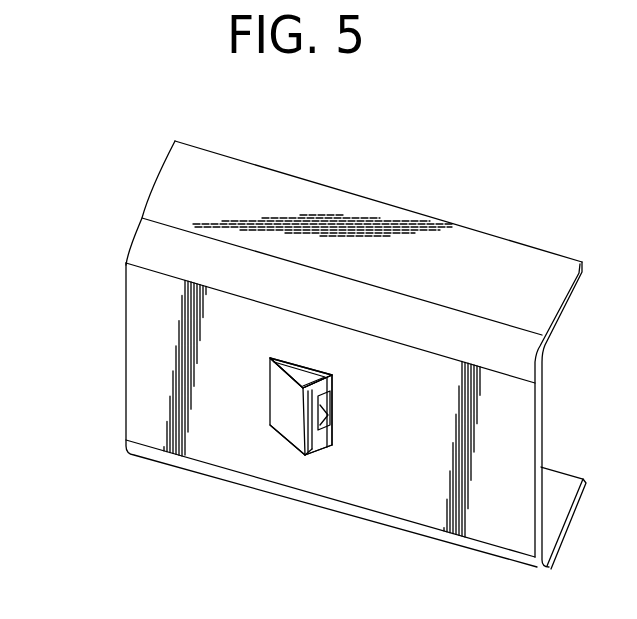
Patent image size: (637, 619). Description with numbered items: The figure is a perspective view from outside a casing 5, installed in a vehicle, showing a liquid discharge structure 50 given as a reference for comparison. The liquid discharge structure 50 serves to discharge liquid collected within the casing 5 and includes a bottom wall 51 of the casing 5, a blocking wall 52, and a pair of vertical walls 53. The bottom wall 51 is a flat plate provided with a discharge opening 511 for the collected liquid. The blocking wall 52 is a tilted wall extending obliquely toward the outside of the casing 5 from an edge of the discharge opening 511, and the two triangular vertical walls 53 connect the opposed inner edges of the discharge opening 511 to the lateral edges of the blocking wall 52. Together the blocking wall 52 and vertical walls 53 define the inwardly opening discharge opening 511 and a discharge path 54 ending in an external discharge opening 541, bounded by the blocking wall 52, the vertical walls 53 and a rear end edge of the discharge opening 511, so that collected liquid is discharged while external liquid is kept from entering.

The casing 5 is at (400, 190).
The liquid discharge structure 50 is at (112, 333).
The bottom wall 51 is at (508, 400).
The discharge opening 511 is at (333, 401).
The blocking wall 52 is at (283, 405).
The vertical walls 53 is at (306, 363).
The discharge path 54 is at (337, 420).
The external discharge opening 541 is at (303, 428).